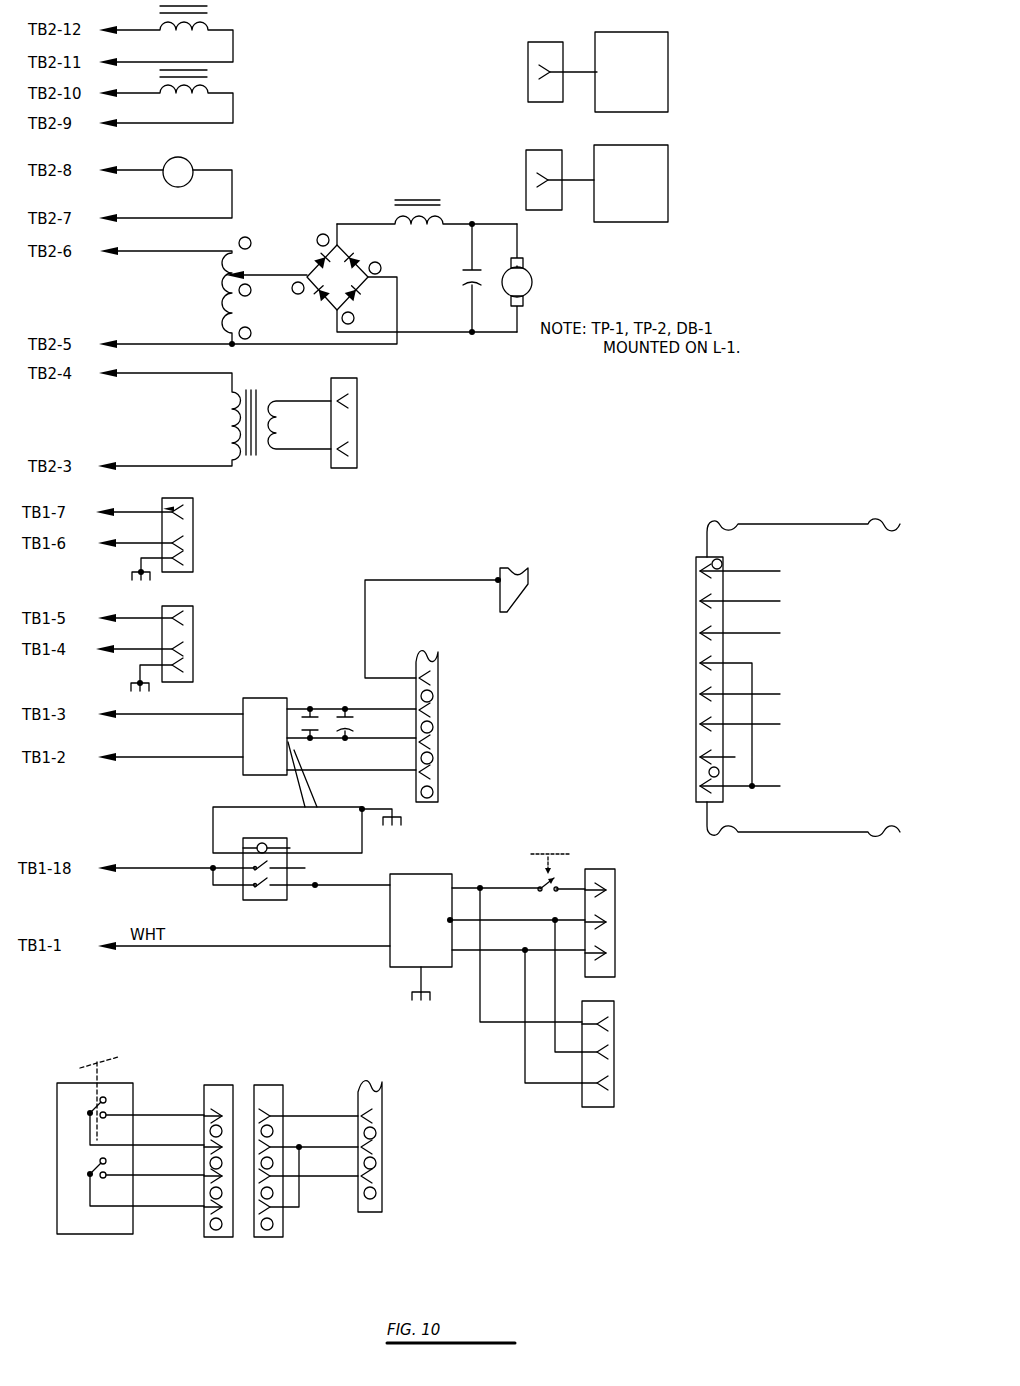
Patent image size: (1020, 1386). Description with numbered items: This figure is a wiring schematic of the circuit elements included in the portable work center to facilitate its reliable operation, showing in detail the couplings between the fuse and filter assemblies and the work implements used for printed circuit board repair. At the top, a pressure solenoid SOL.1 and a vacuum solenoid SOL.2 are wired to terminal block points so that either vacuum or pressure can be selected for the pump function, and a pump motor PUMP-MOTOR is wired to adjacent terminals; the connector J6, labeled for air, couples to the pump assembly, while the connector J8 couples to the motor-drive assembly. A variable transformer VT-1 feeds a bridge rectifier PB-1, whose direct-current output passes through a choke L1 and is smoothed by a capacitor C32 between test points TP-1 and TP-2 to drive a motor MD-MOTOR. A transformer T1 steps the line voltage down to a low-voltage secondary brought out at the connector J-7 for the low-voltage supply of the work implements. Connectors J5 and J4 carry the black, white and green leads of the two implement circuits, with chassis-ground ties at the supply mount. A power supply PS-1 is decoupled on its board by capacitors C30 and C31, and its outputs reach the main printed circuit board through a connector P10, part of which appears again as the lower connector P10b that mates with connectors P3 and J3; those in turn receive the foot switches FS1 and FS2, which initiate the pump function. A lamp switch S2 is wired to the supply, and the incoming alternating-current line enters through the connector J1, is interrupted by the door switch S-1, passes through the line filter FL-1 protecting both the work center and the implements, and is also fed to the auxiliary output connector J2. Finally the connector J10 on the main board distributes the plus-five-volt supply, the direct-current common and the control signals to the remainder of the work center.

The pressure solenoid SOL.1 is at (199, 34).
The vacuum solenoid SOL.2 is at (194, 96).
The pump motor PUMP-MOTOR is at (171, 187).
The variable transformer VT-1 is at (208, 284).
The bridge rectifier PB-1 is at (404, 264).
The inductor L1 is at (427, 214).
The capacitor C32 is at (453, 278).
The test point 1 TP-1 is at (478, 213).
The test point 2 TP-2 is at (481, 345).
The M.D. motor MD-MOTOR is at (568, 278).
The air connector to pump assembly J6 is at (598, 75).
The connector to M.D. motor assembly J8 is at (597, 182).
The transformer T1 is at (220, 414).
The HTPS low voltage connector J-7 is at (401, 413).
The connector S1-1 J5 is at (173, 539).
The connector S1-2 J4 is at (138, 652).
The power supply PS-1 is at (263, 743).
The capacitor C30 is at (324, 714).
The capacitor C31 is at (370, 729).
The P10 connector to main PCB P10 is at (507, 683).
The lamp switch S2 is at (255, 703).
The line filter FL-1 is at (459, 965).
The door switch S-1 is at (538, 893).
The AC input connector J1 is at (644, 912).
The aux AC output connector J2 is at (652, 1044).
The J10 connector on main PCB J10 is at (785, 678).
The foot switch 1 FS1 is at (130, 1135).
The foot switch 2 FS2 is at (133, 1180).
The P3 connector P3 is at (218, 1151).
The J3 connector J3 is at (306, 1151).
The P10 connector (lower portion) P10b is at (370, 1146).